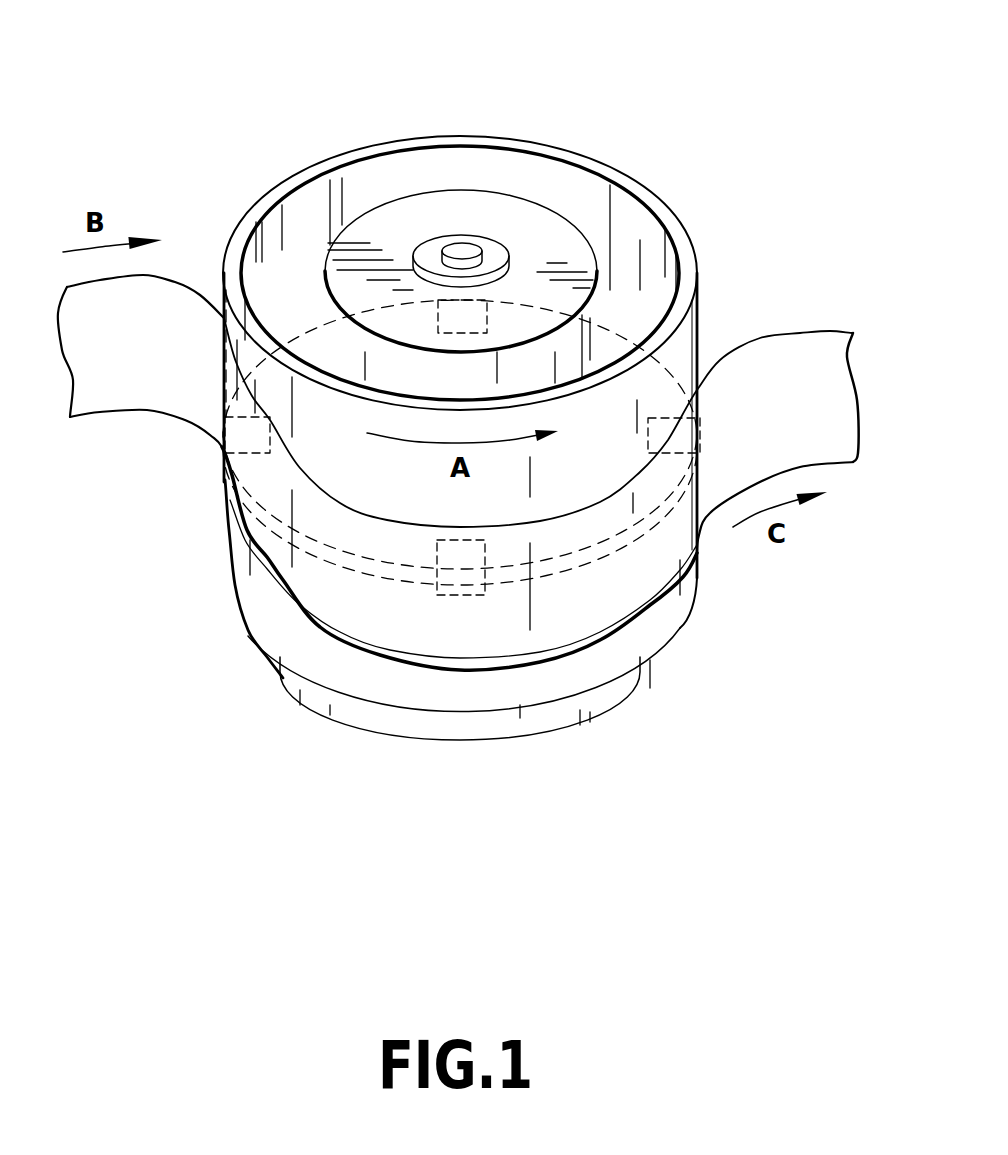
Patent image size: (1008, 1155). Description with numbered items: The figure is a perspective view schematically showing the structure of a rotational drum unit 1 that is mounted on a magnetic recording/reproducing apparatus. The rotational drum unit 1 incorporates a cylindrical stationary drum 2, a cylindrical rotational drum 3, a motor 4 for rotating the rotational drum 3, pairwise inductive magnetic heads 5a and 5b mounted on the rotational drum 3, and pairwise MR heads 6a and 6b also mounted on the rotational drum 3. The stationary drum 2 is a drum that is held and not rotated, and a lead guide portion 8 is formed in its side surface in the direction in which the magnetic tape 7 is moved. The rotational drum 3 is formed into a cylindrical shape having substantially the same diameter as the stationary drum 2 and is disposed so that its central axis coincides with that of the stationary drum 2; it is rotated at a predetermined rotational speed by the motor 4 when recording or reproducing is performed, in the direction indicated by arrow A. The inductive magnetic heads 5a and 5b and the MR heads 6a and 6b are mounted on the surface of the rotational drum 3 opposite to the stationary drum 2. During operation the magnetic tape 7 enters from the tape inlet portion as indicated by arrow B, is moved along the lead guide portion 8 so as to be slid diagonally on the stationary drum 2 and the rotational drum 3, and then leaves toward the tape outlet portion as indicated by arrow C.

The rotational drum unit 1 is at (706, 225).
The stationary drum 2 is at (645, 638).
The rotational drum 3 is at (692, 325).
The motor 4 is at (377, 717).
The inductive magnetic head 5a is at (674, 412).
The inductive magnetic head 5b is at (220, 437).
The MR head 6a is at (480, 320).
The MR head 6b is at (467, 575).
The magnetic tape 7 is at (820, 377).
The lead guide portion 8 is at (343, 617).